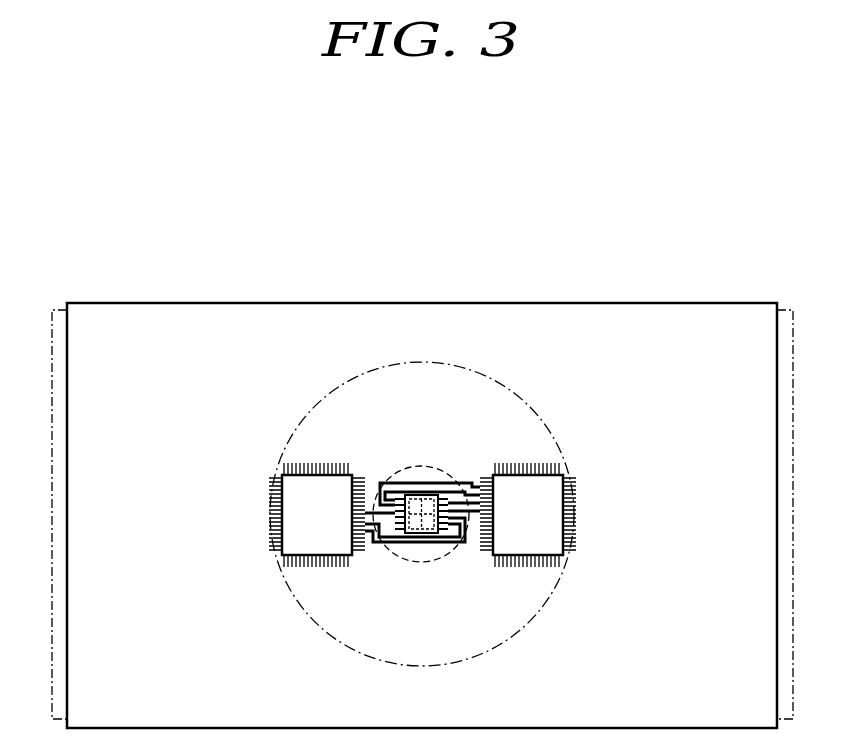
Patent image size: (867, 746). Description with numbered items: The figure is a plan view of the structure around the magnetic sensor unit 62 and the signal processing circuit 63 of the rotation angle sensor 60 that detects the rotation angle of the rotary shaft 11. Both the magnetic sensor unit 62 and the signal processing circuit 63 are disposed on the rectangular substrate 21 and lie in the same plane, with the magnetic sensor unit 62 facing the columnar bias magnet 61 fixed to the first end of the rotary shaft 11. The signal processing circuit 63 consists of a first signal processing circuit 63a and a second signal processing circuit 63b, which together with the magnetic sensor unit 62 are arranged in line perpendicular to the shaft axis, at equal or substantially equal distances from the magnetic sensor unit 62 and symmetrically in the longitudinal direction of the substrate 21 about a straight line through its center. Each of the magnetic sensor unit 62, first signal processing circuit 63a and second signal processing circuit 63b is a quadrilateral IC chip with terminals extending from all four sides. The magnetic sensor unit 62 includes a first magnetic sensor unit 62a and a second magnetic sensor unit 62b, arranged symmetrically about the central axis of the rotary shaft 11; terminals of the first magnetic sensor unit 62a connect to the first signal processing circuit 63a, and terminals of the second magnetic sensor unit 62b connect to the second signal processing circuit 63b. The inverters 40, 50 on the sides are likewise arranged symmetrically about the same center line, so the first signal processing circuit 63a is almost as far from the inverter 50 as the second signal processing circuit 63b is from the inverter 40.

The substrate 21 is at (718, 303).
The inverter 50 is at (52, 327).
The inverter 40 is at (793, 327).
The rotation angle sensor 60 is at (490, 391).
The bias magnet 61 is at (505, 380).
The rotary shaft 11 is at (393, 472).
The magnetic sensor unit 62 is at (484, 430).
The first magnetic sensor unit 62a is at (407, 470).
The second magnetic sensor unit 62b is at (462, 458).
The signal processing circuit 63 is at (491, 627).
The first signal processing circuit 63a is at (335, 540).
The second signal processing circuit 63b is at (510, 540).